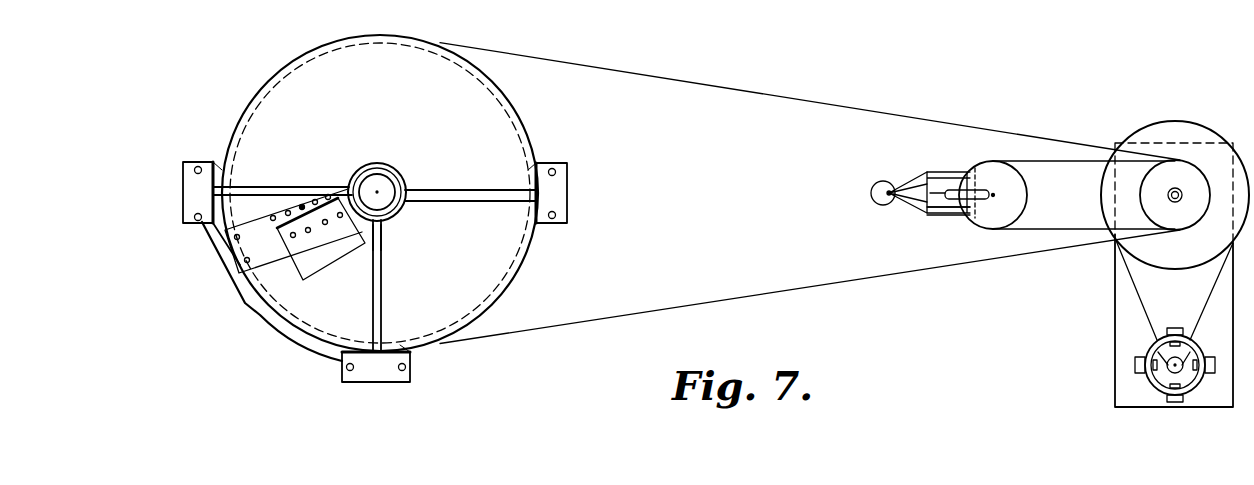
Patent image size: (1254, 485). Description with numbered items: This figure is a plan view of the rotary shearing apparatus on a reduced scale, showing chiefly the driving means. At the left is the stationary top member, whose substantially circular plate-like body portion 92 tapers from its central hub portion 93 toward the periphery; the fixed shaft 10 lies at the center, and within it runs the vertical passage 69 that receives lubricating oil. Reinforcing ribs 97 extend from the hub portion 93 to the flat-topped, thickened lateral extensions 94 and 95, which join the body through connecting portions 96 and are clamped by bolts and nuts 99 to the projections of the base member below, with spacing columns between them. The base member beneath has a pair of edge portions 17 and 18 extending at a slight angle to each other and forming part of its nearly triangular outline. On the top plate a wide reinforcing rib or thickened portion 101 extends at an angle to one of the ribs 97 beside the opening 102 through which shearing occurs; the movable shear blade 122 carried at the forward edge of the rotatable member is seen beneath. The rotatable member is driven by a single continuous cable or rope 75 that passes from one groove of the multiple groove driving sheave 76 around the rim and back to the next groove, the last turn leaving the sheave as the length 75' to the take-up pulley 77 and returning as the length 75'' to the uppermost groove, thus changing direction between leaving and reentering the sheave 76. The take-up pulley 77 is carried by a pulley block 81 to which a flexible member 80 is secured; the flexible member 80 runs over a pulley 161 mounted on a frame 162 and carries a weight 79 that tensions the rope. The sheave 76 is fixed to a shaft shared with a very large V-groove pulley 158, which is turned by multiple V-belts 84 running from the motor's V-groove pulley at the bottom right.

The shaft 10 is at (378, 192).
The edge portion 17 is at (285, 335).
The edge portion 18 is at (222, 270).
The vertical passage 69 is at (1180, 190).
The continuous cable or rope 75 is at (810, 193).
The rope length to take-up pulley 75' is at (1084, 215).
The rope length from take-up pulley 75'' is at (1084, 174).
The multiple groove driving sheave 76 is at (1166, 170).
The take-up pulley 77 is at (1015, 190).
The weight 79 is at (884, 202).
The flexible member 80 is at (935, 172).
The pulley block 81 is at (968, 186).
The multiple V-belts 84 is at (1115, 300).
The circular body portion 92 is at (515, 110).
The central hub portion 93 is at (403, 185).
The lateral extension 94 is at (193, 195).
The lateral extension 95 is at (385, 375).
The connecting portion 96 is at (212, 161).
The reinforcing rib 97 is at (268, 186).
The nut 99 is at (196, 169).
The thickened portion or wide reinforcing rib 101 is at (262, 218).
The opening 102 is at (322, 267).
The movable shear blade 122 is at (383, 237).
The V-groove pulley 158 is at (1137, 243).
The pulley 161 is at (900, 184).
The frame 162 is at (938, 215).